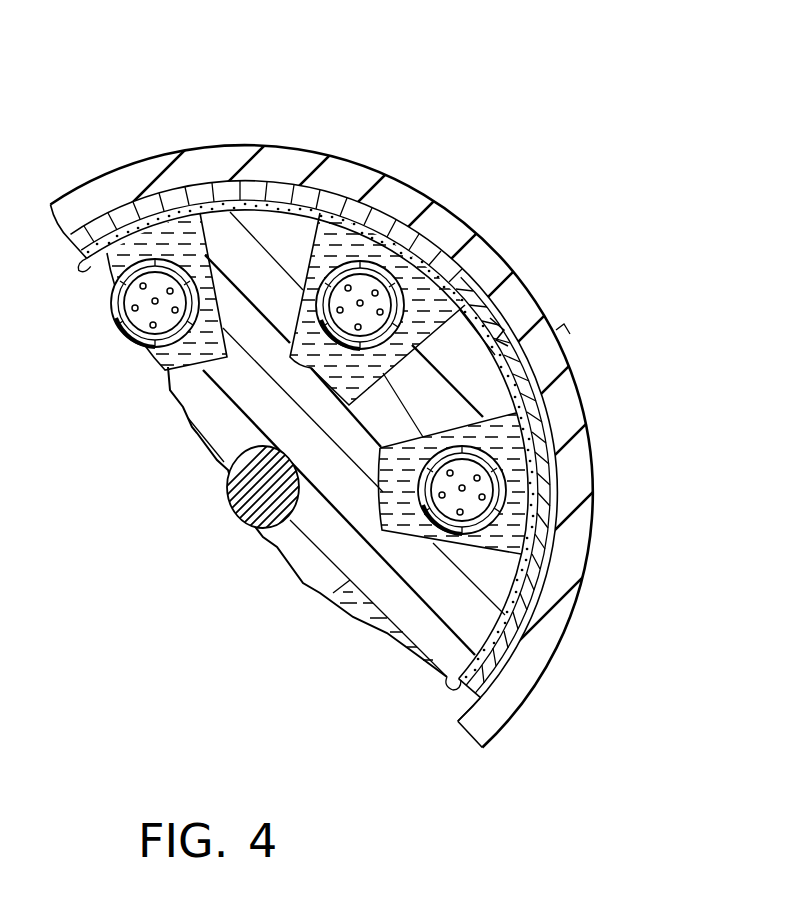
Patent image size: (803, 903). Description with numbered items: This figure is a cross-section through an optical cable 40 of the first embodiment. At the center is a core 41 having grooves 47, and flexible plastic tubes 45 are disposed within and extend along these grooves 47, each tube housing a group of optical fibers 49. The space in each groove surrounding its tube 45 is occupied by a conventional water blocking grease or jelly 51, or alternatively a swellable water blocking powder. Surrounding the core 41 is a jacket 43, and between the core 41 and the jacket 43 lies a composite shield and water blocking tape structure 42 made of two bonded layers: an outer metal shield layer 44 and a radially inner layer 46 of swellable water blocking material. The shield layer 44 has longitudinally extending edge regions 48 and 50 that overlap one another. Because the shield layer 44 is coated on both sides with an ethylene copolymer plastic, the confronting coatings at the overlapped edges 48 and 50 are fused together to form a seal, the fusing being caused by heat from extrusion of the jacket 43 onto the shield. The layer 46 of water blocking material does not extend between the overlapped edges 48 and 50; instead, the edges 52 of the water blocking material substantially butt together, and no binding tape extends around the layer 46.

The optical cable 40 is at (258, 100).
The core 41 is at (313, 612).
The composite shield and water blocking tape structure 42 is at (77, 262).
The jacket 43 is at (333, 168).
The outer metal shield layer 44 is at (540, 650).
The flexible plastic tubes 45 is at (163, 250).
The radially inner layer of swellable water blocking material 46 is at (442, 686).
The grooves 47 is at (381, 186).
The edge region of shield layer 48 is at (568, 433).
The optical fibers 49 is at (378, 298).
The edge region of shield layer 50 is at (568, 352).
The water blocking grease or jelly 51 is at (470, 275).
The edges of water blocking material 52 is at (482, 312).